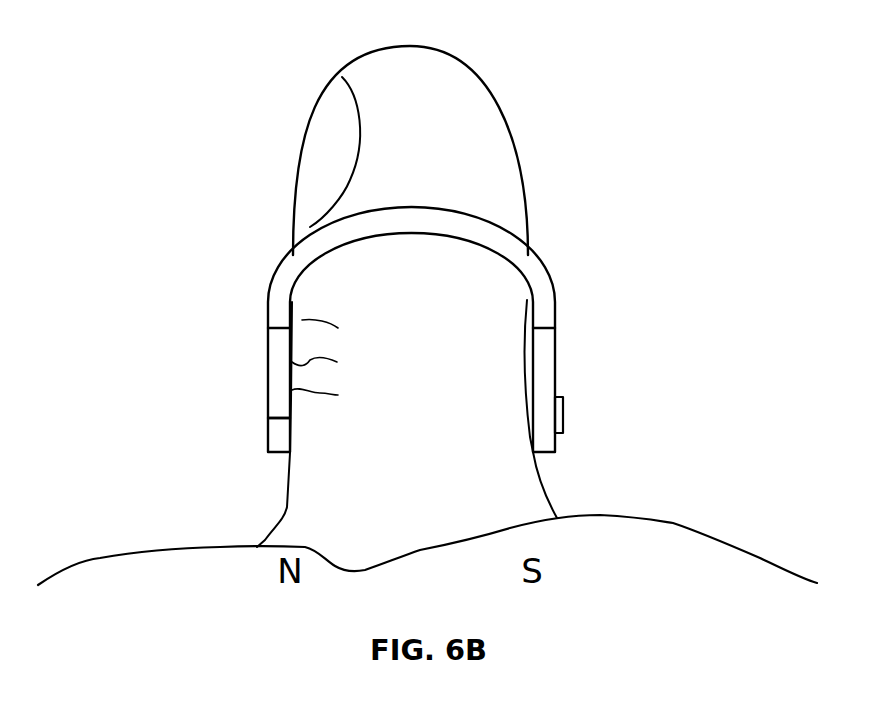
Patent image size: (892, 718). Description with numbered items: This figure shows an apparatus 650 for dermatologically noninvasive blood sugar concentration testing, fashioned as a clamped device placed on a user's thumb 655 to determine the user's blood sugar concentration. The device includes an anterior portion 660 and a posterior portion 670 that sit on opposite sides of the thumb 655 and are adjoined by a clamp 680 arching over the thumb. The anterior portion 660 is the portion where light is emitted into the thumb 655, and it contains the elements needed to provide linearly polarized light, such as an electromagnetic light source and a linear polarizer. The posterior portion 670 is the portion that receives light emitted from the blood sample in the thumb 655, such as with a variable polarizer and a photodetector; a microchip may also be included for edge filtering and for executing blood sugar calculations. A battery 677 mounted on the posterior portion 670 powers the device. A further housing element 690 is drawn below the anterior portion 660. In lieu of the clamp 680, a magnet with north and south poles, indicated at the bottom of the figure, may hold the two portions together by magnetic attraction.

The apparatus 650 is at (194, 53).
The thumb 655 is at (497, 93).
The anterior portion 660 is at (267, 372).
The posterior portion 670 is at (555, 372).
The battery 677 is at (563, 415).
The clamp 680 is at (542, 272).
The lower housing component 690 is at (267, 435).